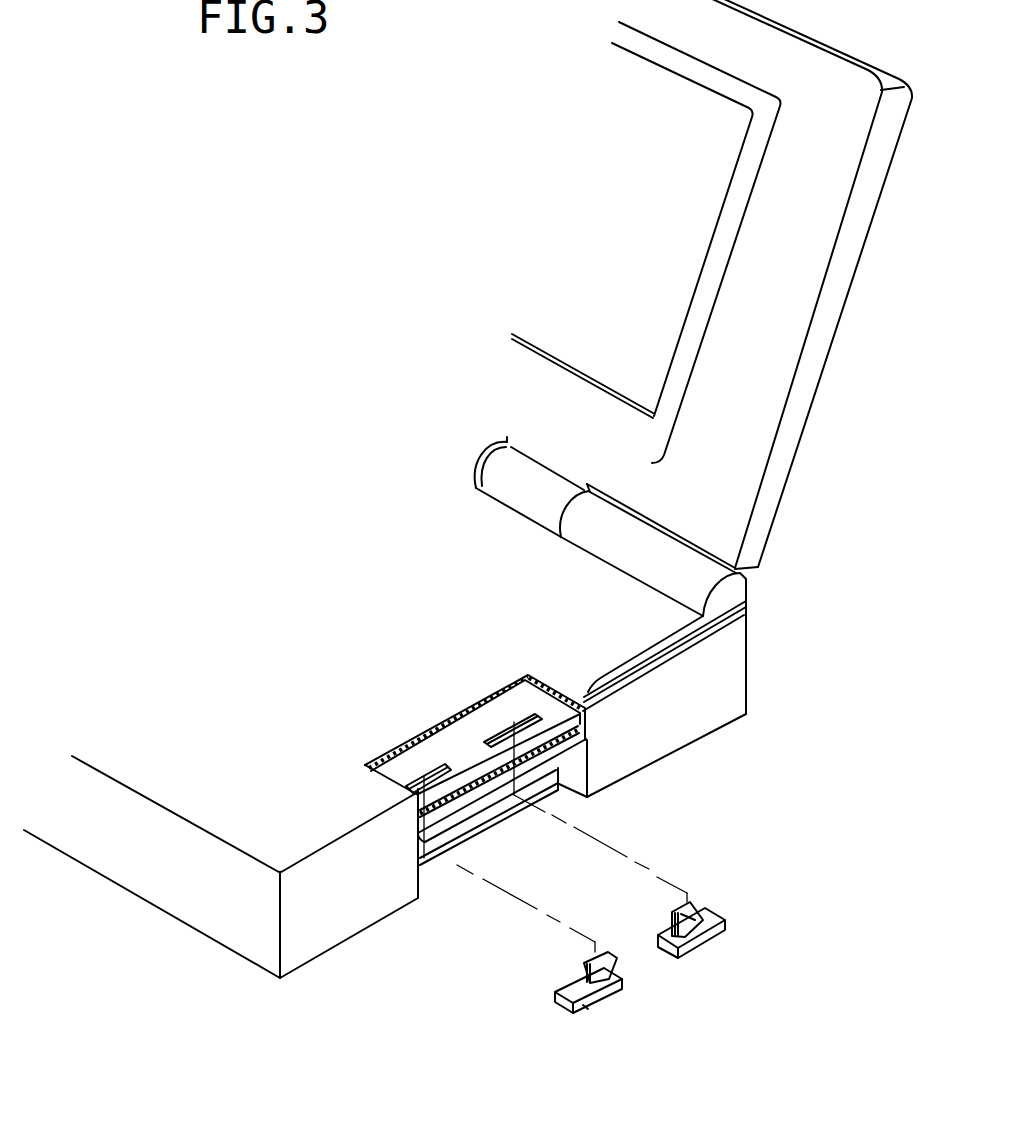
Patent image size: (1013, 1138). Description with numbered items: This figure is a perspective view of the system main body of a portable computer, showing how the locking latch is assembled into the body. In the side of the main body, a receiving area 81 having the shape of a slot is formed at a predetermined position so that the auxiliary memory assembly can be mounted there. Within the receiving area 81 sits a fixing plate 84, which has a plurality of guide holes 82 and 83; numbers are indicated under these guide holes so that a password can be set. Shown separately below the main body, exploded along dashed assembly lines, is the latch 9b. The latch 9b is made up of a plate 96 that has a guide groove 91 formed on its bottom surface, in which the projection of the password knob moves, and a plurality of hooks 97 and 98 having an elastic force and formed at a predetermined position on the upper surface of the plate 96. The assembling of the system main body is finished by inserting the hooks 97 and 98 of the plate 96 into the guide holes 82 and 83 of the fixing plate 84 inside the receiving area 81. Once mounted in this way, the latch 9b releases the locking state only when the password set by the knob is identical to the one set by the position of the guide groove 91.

The receiving area 81 is at (434, 869).
The guide hole 82 is at (430, 775).
The guide hole 83 is at (528, 722).
The fixing plate 84 is at (474, 738).
The guide groove 91 is at (714, 934).
The plate 96 is at (706, 945).
The hook 97 is at (670, 917).
The hook 98 is at (695, 923).
The latch 9b is at (706, 924).